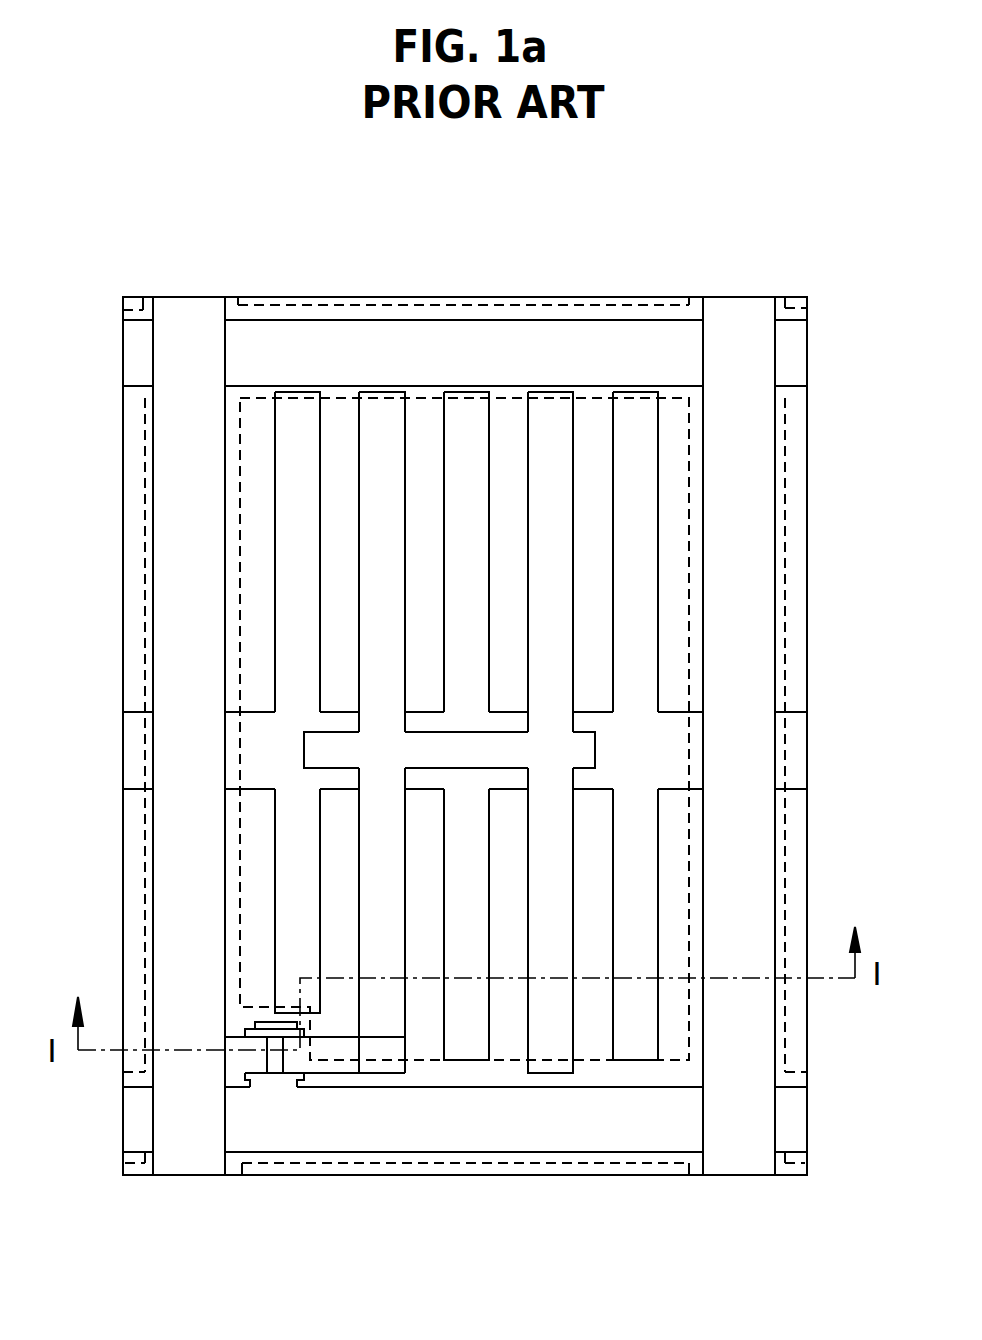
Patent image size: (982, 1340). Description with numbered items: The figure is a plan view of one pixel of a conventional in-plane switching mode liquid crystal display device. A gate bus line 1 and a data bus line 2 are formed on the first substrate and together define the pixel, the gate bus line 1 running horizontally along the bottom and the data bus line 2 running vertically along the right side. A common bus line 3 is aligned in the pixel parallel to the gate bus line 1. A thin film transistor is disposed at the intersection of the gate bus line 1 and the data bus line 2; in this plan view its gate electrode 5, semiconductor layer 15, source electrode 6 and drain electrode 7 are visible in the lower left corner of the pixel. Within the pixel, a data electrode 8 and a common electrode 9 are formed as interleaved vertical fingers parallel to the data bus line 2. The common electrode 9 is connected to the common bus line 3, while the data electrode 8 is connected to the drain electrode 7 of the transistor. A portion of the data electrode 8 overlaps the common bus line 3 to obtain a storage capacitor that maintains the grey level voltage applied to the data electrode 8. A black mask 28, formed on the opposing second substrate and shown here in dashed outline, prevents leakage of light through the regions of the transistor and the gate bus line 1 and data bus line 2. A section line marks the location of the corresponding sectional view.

The gate bus line 1 is at (800, 1115).
The data bus line 2 is at (745, 1152).
The common bus line 3 is at (798, 753).
The black mask 28 is at (785, 850).
The gate electrode 5 is at (273, 1085).
The source electrode 6 is at (228, 1073).
The drain electrode 7 is at (290, 1062).
The data electrode 8 is at (556, 1043).
The common electrode 9 is at (467, 1043).
The semiconductor layer 15 is at (268, 1022).